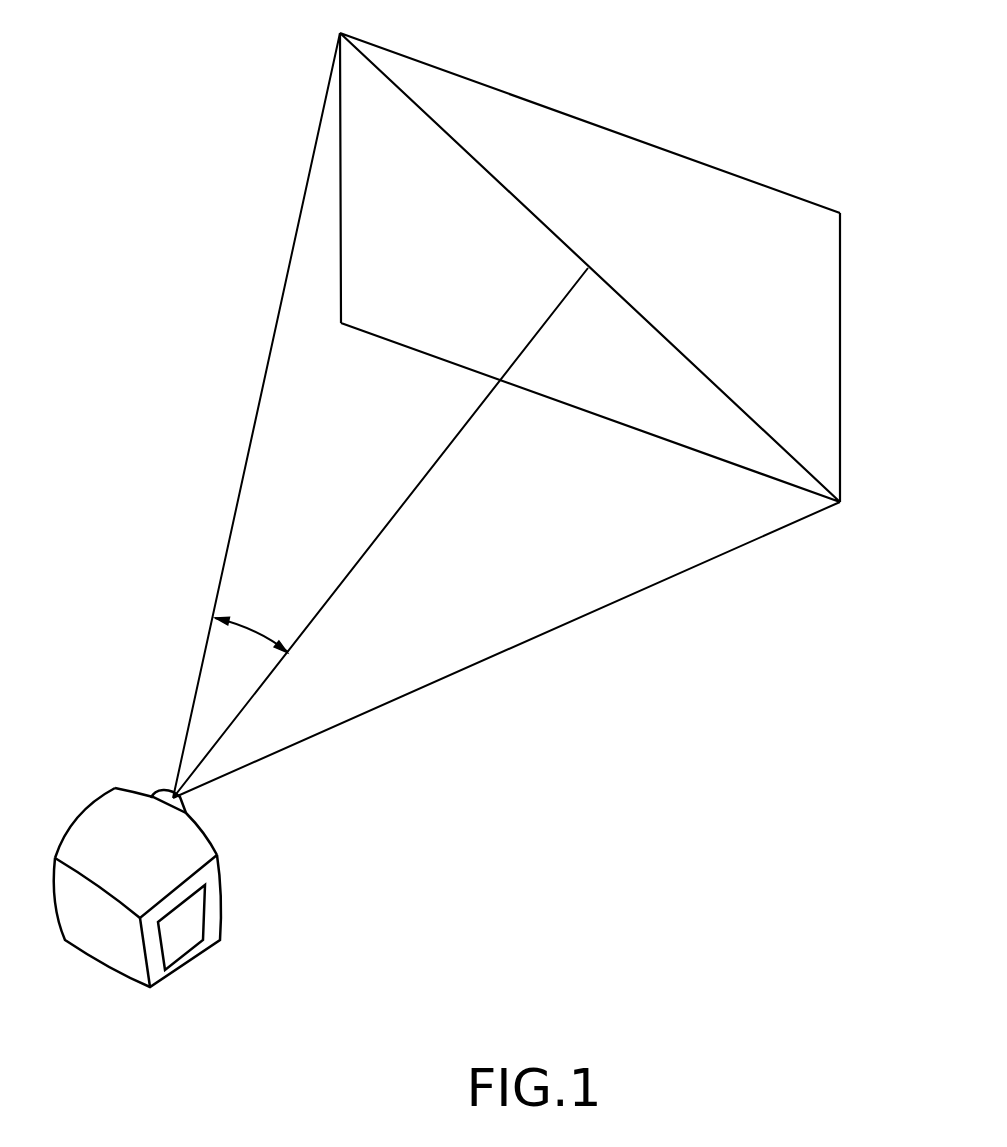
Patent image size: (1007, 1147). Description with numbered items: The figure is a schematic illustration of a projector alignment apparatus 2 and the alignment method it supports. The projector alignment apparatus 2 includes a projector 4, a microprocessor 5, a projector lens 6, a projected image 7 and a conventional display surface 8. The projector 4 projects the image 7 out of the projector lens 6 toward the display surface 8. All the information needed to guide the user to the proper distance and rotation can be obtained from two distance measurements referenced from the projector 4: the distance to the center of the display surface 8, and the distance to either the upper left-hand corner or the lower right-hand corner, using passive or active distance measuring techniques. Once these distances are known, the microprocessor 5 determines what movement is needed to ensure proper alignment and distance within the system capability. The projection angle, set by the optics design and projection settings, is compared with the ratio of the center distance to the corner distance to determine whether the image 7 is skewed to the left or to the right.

The projector alignment apparatus 2 is at (524, 401).
The projector 4 is at (134, 867).
The microprocessor 5 is at (195, 944).
The projector lens 6 is at (187, 818).
The image 7 is at (434, 235).
The display surface 8 is at (841, 297).